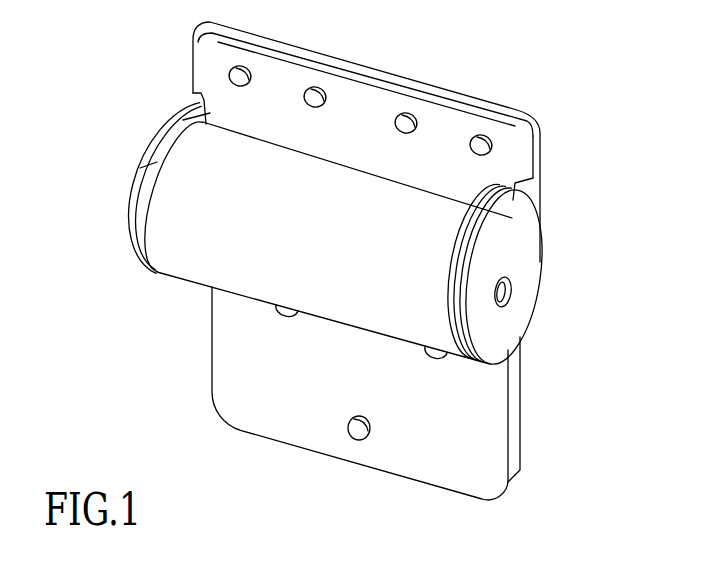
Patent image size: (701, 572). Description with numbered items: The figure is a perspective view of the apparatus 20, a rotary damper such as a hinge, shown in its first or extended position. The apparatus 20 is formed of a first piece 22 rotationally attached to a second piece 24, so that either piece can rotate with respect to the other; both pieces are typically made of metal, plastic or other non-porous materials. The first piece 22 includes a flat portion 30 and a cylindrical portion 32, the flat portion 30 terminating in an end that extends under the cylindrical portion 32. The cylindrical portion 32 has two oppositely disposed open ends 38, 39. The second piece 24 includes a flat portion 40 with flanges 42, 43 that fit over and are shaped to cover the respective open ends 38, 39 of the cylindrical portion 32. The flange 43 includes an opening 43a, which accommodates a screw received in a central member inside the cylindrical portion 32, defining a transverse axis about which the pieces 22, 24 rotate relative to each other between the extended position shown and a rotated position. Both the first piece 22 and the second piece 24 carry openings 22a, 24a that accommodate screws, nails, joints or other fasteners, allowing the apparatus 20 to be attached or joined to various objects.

The apparatus 20 is at (164, 74).
The first piece 22 is at (331, 384).
The openings 22a is at (440, 362).
The second piece 24 is at (370, 151).
The openings 24a is at (238, 68).
The flat portion 30 is at (517, 380).
The cylindrical portion 32 is at (445, 218).
The open end 38 is at (147, 162).
The open end 39 is at (470, 244).
The flat portion 40 is at (424, 84).
The flange 42 is at (125, 229).
The flange 43 is at (523, 268).
The opening 43a is at (509, 297).